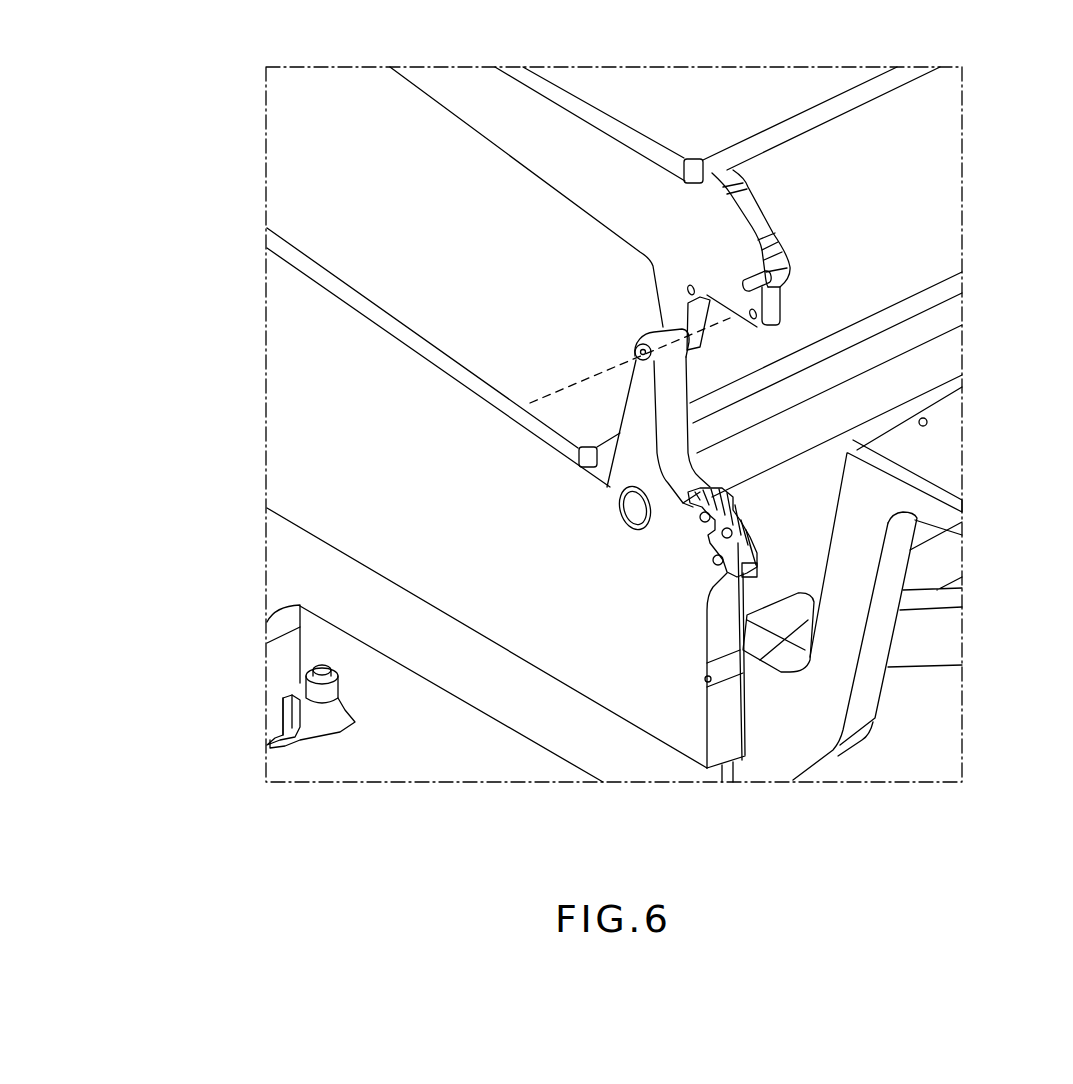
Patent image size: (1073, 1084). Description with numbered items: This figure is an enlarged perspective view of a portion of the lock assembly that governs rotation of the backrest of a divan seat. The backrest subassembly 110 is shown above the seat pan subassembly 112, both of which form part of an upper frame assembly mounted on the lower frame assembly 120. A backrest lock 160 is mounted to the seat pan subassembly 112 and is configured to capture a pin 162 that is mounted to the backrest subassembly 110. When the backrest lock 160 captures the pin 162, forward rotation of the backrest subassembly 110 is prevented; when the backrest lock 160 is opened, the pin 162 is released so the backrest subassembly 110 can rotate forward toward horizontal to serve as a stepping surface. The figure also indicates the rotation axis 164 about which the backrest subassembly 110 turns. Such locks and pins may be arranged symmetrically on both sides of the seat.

The backrest subassembly 110 is at (732, 231).
The seat pan subassembly 112 is at (285, 413).
The lower frame assembly 120 is at (285, 568).
The backrest lock 160 is at (750, 543).
The pin 162 is at (790, 272).
The rotation axis 164 is at (600, 372).